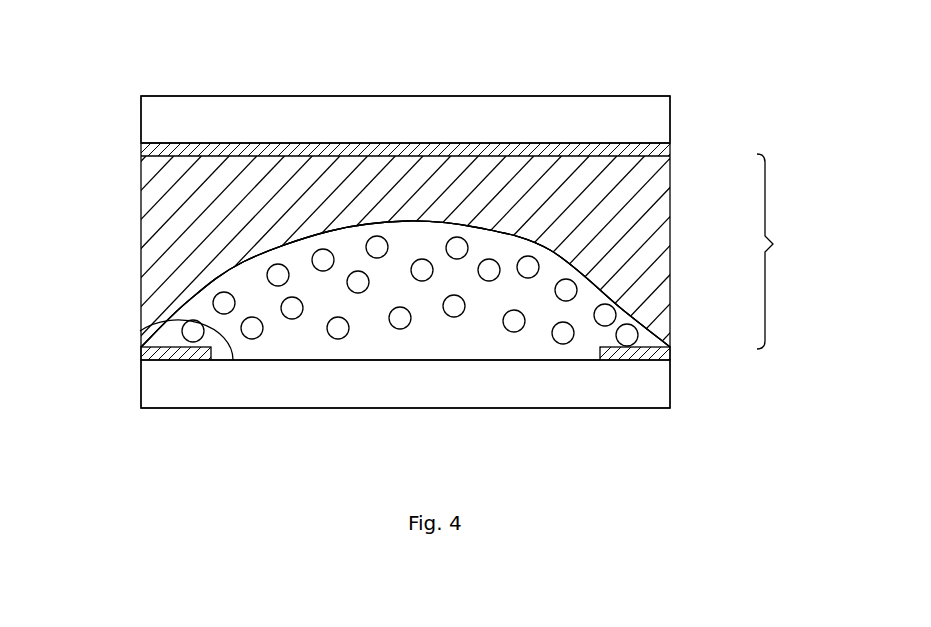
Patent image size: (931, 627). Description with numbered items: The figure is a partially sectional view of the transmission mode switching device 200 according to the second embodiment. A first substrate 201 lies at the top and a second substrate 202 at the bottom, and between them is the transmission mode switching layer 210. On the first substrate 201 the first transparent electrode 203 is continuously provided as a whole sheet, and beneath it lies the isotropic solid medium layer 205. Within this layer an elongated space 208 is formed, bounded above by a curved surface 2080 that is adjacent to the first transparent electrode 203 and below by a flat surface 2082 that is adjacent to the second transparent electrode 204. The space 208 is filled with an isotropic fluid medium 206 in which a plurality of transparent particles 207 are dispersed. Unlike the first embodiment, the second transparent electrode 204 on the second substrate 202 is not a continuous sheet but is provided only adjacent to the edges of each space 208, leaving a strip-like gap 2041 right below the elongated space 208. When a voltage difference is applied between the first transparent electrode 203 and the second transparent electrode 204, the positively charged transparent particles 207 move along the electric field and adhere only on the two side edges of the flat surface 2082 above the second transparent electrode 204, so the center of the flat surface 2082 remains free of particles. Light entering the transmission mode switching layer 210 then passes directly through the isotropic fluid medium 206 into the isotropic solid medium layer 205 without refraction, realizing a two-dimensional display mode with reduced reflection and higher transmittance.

The transmission mode switching device 200 is at (658, 50).
The first substrate 201 is at (652, 122).
The second substrate 202 is at (655, 393).
The first transparent electrode 203 is at (662, 156).
The second transparent electrode 204 is at (665, 355).
The strip-like gap 2041 is at (440, 358).
The isotropic solid medium layer 205 is at (645, 223).
The isotropic fluid medium 206 is at (597, 293).
The transparent particles 207 is at (607, 315).
The space 208 is at (203, 312).
The curved surface 2080 is at (247, 258).
The flat surface 2082 is at (163, 320).
The transmission mode switching layer 210 is at (789, 251).